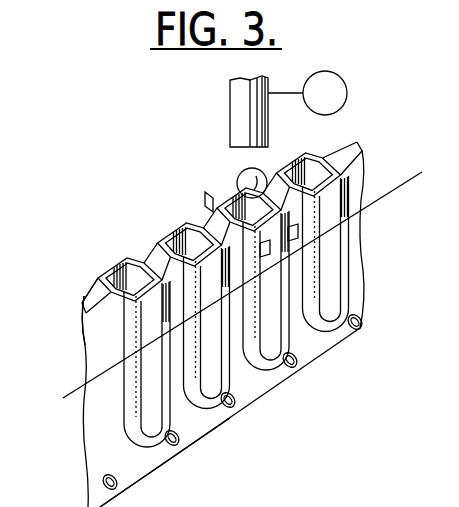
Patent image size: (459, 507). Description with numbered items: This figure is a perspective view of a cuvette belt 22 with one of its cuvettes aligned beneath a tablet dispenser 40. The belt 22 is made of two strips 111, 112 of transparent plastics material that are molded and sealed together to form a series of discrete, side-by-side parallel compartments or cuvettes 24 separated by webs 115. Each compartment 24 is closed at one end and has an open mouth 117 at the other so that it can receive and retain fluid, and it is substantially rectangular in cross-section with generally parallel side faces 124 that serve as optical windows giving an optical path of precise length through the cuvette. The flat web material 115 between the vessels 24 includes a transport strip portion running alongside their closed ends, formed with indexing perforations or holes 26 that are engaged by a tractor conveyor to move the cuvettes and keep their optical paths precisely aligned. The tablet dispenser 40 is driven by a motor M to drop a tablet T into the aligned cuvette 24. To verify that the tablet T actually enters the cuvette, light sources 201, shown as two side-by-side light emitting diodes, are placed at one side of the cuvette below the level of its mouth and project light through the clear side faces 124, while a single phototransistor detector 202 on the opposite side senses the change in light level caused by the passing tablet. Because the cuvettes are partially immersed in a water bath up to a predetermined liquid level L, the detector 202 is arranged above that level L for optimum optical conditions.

The belt 22 is at (198, 227).
The compartments (cuvettes) 24 is at (155, 383).
The indexing perforations 26 is at (236, 402).
The tablet dispenser 40 is at (230, 100).
The strip 111 is at (90, 298).
The strip 112 is at (100, 314).
The webs 115 is at (150, 457).
The open mouth 117 is at (118, 222).
The side faces 124 is at (333, 303).
The light sources 201 is at (268, 250).
The detector 202 is at (210, 200).
The tablet T is at (240, 176).
The water level L is at (391, 182).
The motor M is at (307, 93).